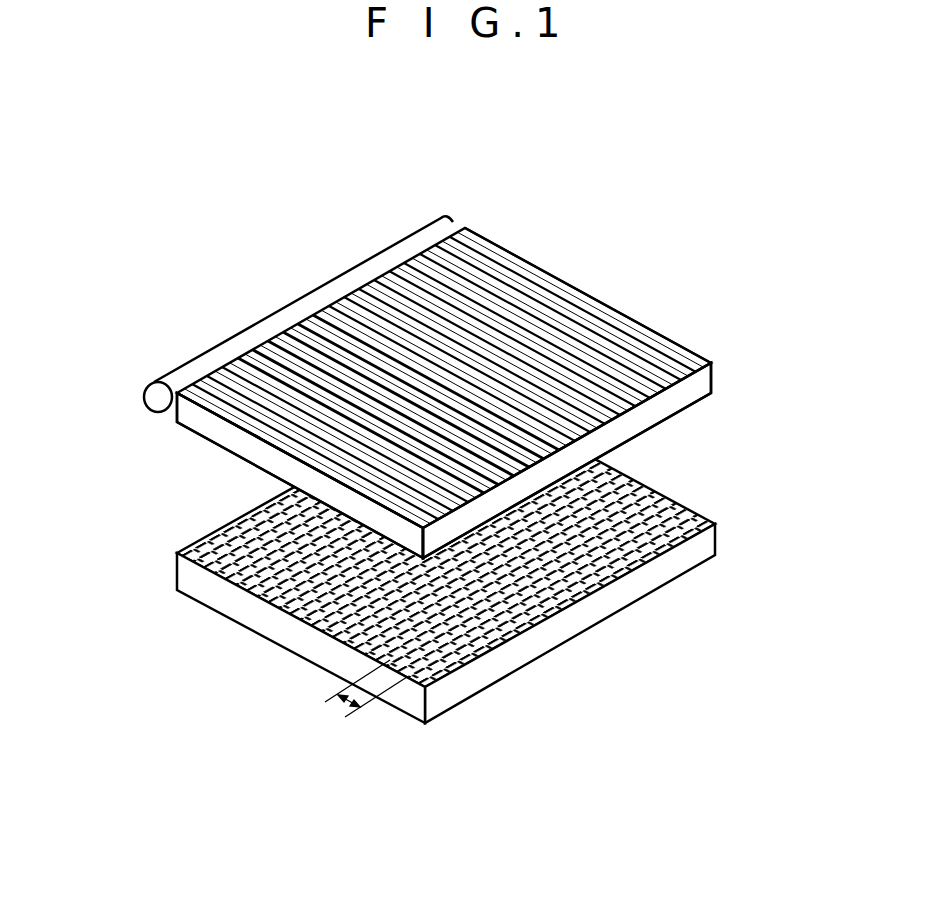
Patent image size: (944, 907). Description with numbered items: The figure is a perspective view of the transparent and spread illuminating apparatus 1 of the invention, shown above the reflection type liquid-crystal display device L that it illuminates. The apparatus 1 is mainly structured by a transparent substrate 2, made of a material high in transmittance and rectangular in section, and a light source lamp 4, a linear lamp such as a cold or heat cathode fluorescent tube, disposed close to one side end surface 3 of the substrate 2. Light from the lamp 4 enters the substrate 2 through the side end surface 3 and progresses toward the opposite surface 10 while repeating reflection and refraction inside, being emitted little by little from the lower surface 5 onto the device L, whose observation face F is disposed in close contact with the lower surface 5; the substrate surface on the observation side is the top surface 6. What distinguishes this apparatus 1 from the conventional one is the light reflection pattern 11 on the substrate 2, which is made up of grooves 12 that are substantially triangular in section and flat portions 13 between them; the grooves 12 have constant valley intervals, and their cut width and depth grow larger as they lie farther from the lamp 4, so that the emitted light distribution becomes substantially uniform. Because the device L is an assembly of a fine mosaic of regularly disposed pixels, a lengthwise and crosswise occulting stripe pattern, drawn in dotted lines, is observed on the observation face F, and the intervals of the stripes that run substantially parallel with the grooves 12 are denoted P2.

The transparent and spread illuminating apparatus 1 is at (646, 298).
The opposite surface 10 is at (697, 388).
The light reflection pattern 11 is at (477, 267).
The flat portions 13 is at (350, 322).
The top surface 6 is at (522, 268).
The light source lamp 4 is at (237, 348).
The one side end surface 3 is at (173, 415).
The transparent substrate 2 is at (203, 422).
The lower surface 5 is at (233, 453).
The grooves 12 is at (305, 560).
The observation face F is at (556, 570).
The reflection type liquid-crystal display device L is at (300, 653).
The intervals of the stripes P2 is at (340, 703).